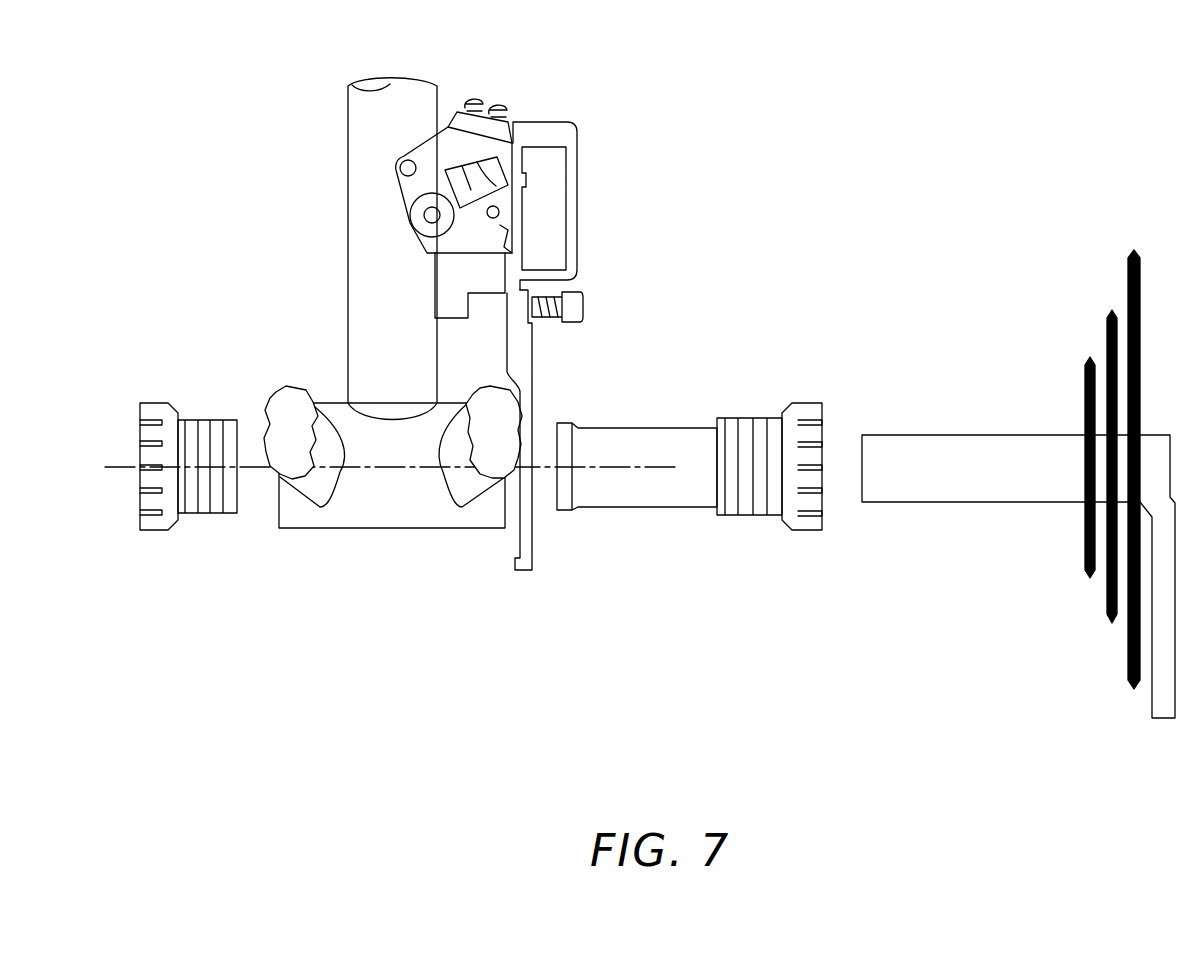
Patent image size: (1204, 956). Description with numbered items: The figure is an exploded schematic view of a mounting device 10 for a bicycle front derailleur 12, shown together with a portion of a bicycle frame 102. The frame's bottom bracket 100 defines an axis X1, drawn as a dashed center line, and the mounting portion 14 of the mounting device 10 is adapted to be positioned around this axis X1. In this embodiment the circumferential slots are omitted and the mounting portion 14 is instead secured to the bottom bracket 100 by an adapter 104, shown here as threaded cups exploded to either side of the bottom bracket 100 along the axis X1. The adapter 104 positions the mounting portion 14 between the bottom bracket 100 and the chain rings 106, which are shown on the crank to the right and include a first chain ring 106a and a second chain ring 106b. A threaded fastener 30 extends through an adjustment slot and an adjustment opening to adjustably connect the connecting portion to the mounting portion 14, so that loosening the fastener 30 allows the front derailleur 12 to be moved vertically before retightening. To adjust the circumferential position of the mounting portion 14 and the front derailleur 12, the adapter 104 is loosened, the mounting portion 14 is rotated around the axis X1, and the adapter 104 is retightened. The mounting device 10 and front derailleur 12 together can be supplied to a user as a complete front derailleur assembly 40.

The mounting device 10 is at (599, 327).
The front derailleur 12 is at (482, 142).
The mounting portion 14 is at (533, 543).
The threaded fastener 30 is at (583, 307).
The front derailleur assembly 40 is at (604, 121).
The bottom bracket 100 is at (348, 515).
The bicycle frame 102 is at (363, 280).
The adapter 104 is at (203, 500).
The chain rings 106 is at (1026, 454).
The first chain ring 106a is at (1134, 253).
The second chain ring 106b is at (1113, 313).
The axis X1 is at (391, 467).